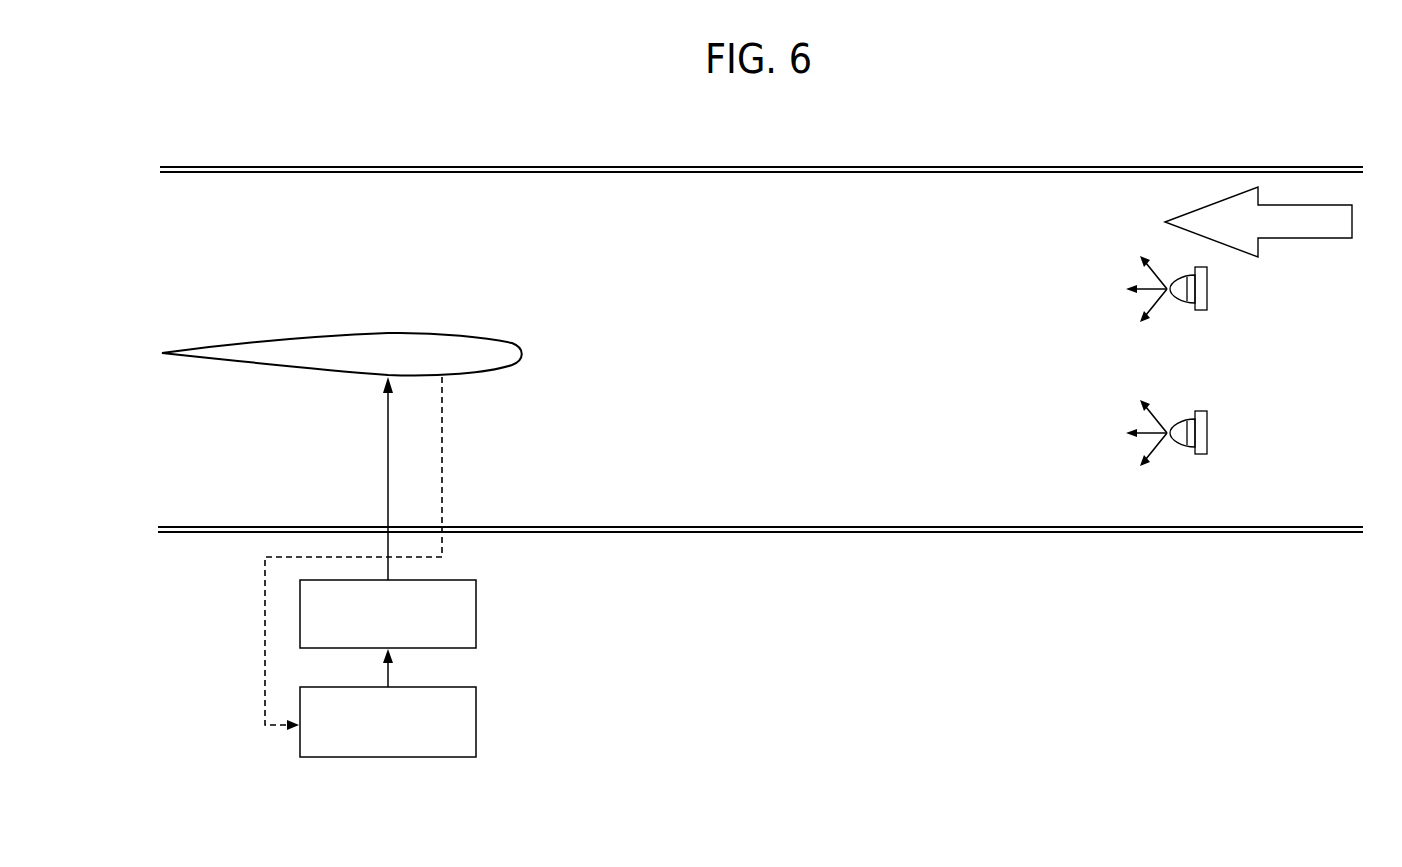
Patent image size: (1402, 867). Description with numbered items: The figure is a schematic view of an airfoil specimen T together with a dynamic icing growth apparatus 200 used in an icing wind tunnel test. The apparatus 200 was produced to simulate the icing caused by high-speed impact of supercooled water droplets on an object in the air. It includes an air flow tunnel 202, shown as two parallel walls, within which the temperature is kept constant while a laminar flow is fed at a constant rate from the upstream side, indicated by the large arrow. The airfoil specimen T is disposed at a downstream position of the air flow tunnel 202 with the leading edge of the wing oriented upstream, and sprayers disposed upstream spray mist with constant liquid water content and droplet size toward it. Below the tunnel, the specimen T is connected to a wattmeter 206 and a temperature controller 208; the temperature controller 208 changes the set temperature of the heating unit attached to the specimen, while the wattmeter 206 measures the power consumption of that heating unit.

The dynamic icing growth apparatus 200 is at (1276, 157).
The air flow tunnel 202 is at (795, 234).
The airfoil specimen T is at (486, 326).
The wattmeter 206 is at (478, 609).
The temperature controller 208 is at (478, 710).